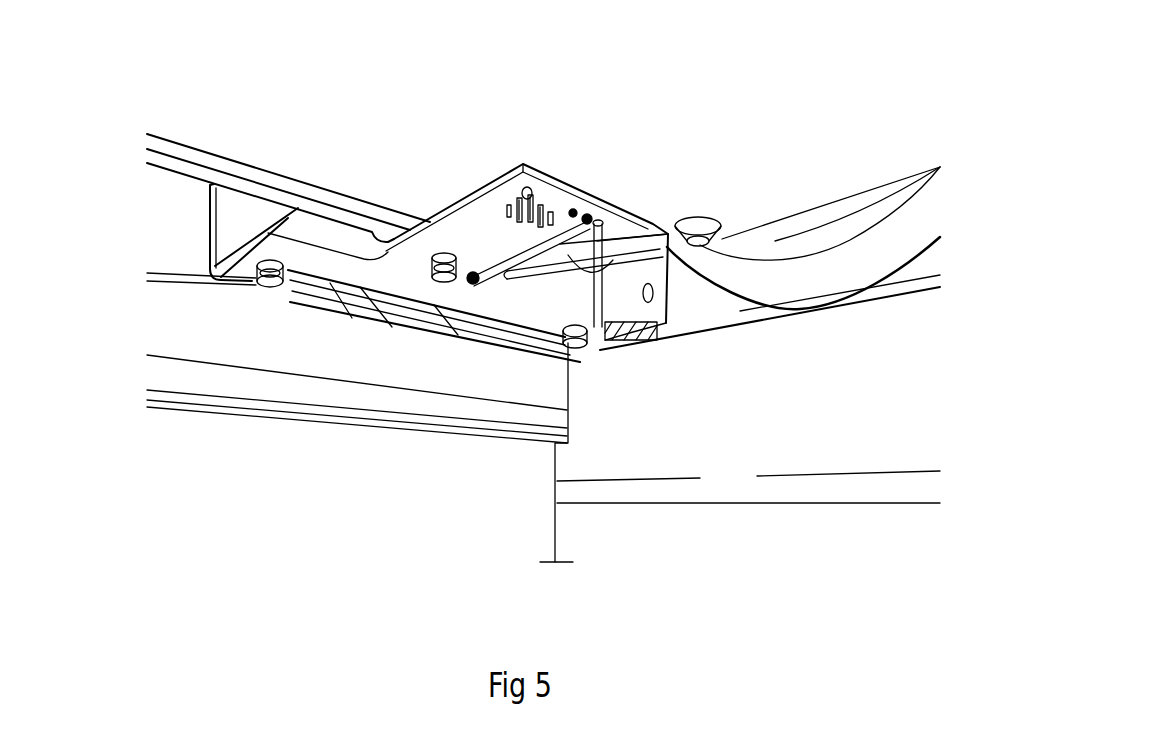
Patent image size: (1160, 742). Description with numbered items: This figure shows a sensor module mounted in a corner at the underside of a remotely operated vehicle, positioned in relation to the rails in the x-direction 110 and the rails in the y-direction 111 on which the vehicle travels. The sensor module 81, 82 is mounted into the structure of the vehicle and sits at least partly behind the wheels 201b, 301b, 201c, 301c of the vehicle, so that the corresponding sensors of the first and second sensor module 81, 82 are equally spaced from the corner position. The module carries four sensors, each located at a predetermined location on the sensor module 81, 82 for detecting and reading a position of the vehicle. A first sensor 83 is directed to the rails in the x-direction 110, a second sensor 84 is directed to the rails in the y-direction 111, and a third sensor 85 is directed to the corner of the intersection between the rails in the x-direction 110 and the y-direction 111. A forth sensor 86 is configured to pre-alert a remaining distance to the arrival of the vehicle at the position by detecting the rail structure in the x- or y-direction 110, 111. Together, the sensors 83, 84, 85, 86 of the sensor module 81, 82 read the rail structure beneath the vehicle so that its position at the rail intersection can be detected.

The first sensor module 81 is at (527, 200).
The second sensor module 82 is at (470, 228).
The first sensor 83 is at (613, 343).
The second sensor 84 is at (260, 283).
The third sensor 85 is at (563, 337).
The forth sensor 86 is at (588, 218).
The rails in the x-direction 110 is at (780, 333).
The rails in the y-direction 111 is at (340, 333).
The wheel of the vehicle 201b is at (880, 232).
The wheel of the vehicle 301b is at (770, 293).
The wheel of the vehicle 201c is at (460, 325).
The wheel of the vehicle 301c is at (556, 452).